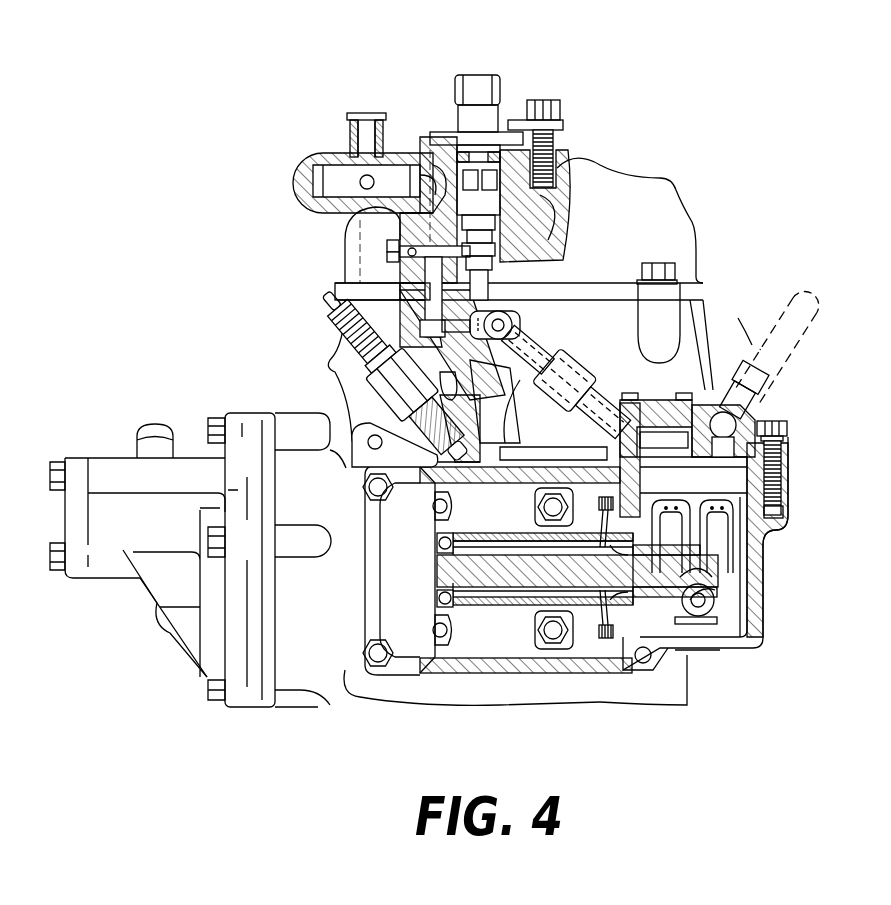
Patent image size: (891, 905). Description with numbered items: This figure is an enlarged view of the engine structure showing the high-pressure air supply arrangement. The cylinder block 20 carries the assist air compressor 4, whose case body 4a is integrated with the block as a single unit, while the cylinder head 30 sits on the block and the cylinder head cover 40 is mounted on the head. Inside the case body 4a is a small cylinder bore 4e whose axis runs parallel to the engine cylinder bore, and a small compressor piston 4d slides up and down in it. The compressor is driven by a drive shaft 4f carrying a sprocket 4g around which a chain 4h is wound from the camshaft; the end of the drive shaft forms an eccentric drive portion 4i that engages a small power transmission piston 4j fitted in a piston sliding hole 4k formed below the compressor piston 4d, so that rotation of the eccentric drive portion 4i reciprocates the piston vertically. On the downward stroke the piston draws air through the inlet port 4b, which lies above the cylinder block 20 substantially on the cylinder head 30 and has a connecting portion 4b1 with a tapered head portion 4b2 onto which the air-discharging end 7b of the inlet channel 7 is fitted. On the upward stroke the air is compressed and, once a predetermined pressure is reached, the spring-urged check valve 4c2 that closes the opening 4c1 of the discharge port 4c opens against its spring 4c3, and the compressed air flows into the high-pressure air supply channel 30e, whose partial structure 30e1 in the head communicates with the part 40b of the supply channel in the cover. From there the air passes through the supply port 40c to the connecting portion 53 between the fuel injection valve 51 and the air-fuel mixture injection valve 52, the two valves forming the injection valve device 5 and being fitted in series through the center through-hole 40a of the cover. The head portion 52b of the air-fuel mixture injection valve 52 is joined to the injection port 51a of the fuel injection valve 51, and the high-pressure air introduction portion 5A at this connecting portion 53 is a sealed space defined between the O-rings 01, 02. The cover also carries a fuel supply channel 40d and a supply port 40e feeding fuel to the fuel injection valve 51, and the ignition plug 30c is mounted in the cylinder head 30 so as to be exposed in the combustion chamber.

The cylinder block 20 is at (800, 585).
The assist air compressor 4 is at (740, 610).
The case body 4a is at (760, 590).
The inlet port 4b is at (748, 428).
The connecting portion 4b1 is at (755, 405).
The head portion 4b2 is at (752, 388).
The discharge port 4c is at (645, 458).
The opening of the discharge port 4c1 is at (668, 415).
The check valve 4c2 is at (678, 460).
The spring 4c3 is at (700, 450).
The compressor piston 4d is at (780, 512).
The small cylinder bore 4e is at (783, 478).
The drive shaft 4f is at (503, 575).
The sprocket 4g is at (603, 643).
The chain 4h is at (612, 665).
The eccentric drive portion 4i is at (693, 600).
The power transmission piston 4j is at (708, 620).
The piston sliding hole 4k is at (690, 630).
The injection valve device 5 is at (522, 100).
The high-pressure air introduction portion 5A is at (497, 262).
The inlet channel 7 is at (758, 318).
The other end of the inlet channel 7b is at (752, 345).
The cylinder head 30 is at (797, 350).
The ignition plug 30c is at (372, 365).
The high-pressure air supply channel 30e is at (590, 400).
The partial structure of the high-pressure air supply channel 30e1 is at (552, 357).
The cylinder head cover 40 is at (690, 175).
The center through-hole 40a is at (555, 212).
The part of the supply channel 40b is at (397, 272).
The supply port 40c is at (398, 242).
The fuel supply channel 40d is at (365, 115).
The supply port 40e is at (440, 172).
The O-ring 01 is at (424, 220).
The O-ring 02 is at (400, 272).
The fuel injection valve 51 is at (465, 102).
The injection port 51a is at (562, 292).
The air-fuel mixture injection valve 52 is at (482, 286).
The head portion 52b is at (623, 273).
The connecting portion 53 is at (492, 247).